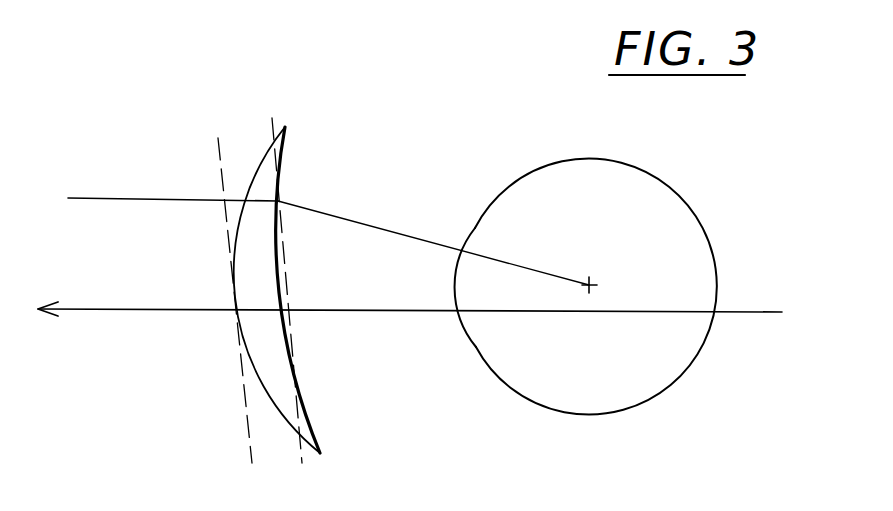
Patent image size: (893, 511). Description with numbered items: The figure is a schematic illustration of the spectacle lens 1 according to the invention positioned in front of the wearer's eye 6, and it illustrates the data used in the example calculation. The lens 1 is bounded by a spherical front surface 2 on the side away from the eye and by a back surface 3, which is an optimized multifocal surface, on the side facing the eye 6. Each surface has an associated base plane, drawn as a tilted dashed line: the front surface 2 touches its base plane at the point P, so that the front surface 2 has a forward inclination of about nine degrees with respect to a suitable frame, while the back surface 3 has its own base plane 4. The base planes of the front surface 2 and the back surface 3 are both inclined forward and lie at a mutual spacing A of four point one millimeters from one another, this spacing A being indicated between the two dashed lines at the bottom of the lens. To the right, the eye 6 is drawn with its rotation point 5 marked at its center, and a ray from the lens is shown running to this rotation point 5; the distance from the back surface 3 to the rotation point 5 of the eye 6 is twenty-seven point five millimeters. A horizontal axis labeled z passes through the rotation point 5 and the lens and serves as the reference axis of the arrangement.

The spectacle lens 1 is at (283, 128).
The front surface 2 is at (254, 160).
The back surface 3 is at (218, 155).
The base plane of the back surface 4 is at (287, 262).
The rotation point 5 is at (593, 283).
The eye 6 is at (667, 387).
The point P is at (235, 310).
The mutual spacing A is at (342, 462).
The z axis z is at (410, 321).